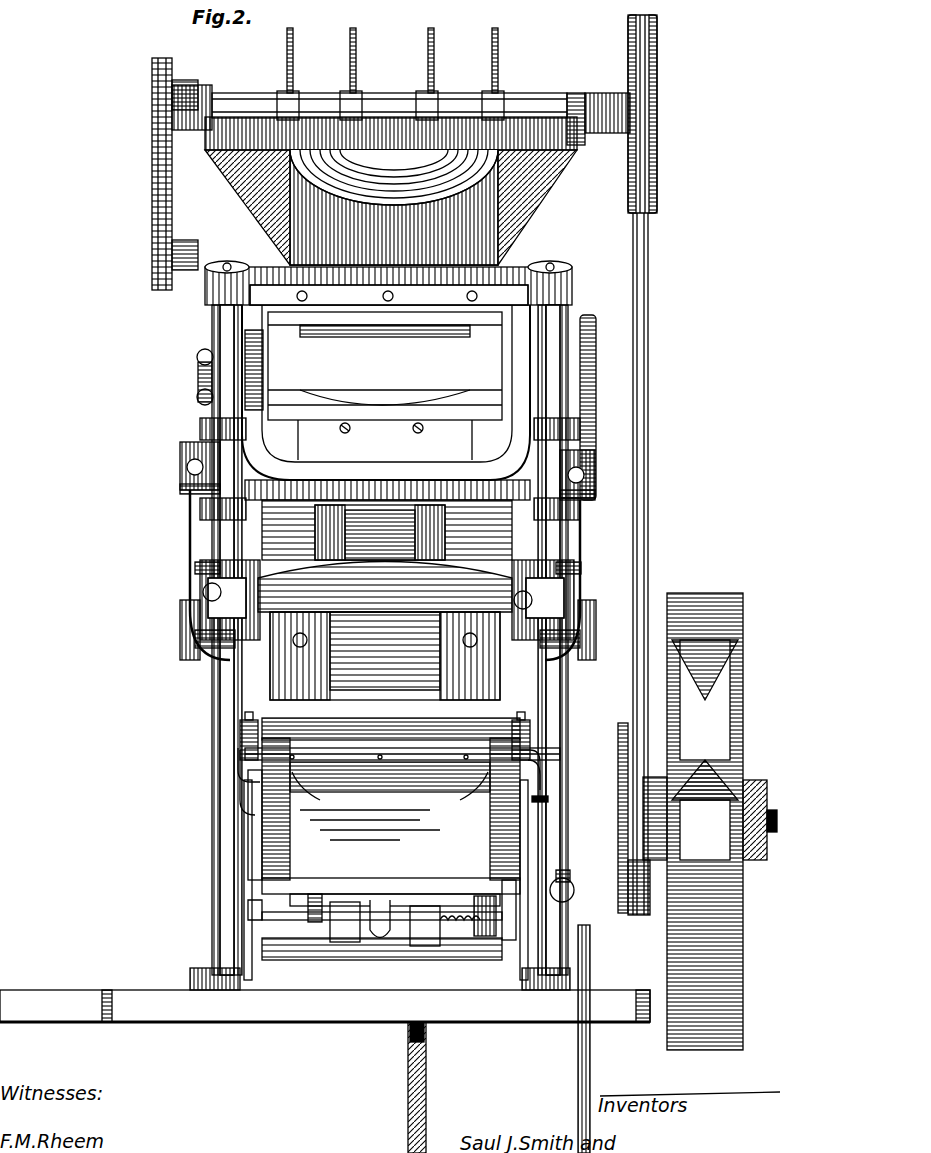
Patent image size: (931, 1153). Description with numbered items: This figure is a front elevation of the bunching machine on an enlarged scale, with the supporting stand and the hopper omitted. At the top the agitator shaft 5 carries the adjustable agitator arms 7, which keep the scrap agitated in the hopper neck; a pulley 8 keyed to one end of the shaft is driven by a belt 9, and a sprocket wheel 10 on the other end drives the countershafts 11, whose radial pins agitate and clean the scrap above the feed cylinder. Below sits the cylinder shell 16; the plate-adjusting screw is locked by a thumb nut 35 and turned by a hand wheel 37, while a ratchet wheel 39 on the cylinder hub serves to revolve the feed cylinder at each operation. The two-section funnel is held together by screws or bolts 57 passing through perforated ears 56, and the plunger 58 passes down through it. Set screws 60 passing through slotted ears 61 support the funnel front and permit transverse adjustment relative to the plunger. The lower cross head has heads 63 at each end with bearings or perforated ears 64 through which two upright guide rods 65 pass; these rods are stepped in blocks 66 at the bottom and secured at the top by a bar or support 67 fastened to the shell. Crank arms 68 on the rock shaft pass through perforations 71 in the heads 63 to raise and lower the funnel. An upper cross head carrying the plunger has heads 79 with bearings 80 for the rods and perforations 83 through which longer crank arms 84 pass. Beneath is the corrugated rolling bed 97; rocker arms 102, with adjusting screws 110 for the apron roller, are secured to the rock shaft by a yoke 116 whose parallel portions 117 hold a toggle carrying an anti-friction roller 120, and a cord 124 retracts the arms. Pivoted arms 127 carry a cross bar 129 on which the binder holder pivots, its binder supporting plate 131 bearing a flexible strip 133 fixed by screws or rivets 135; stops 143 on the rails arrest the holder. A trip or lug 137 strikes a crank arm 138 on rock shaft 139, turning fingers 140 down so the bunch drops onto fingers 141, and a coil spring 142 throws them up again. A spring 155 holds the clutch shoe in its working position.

The agitator shaft 5 is at (401, 105).
The agitator arms 7 is at (398, 74).
The pulley 8 is at (654, 114).
The belt 9 is at (654, 564).
The sprocket wheel 10 is at (157, 174).
The countershafts 11 is at (158, 267).
The cylinder shell 16 is at (400, 381).
The thumb nut 35 is at (184, 375).
The hand wheel 37 is at (603, 407).
The ratchet wheel 39 is at (211, 370).
The perforated ears 56 is at (381, 668).
The screws or bolts 57 is at (333, 658).
The plunger 58 is at (387, 530).
The set screws 60 is at (385, 587).
The slotted ears 61 is at (387, 586).
The heads 63 is at (373, 628).
The bearings or perforated ears 64 is at (381, 604).
The guide rods 65 is at (385, 759).
The blocks 66 is at (396, 974).
The bar or support 67 is at (388, 268).
The crank arms 68 is at (434, 587).
The perforations 71 is at (437, 575).
The heads 79 is at (421, 463).
The bearings 80 is at (415, 461).
The perforations 83 is at (411, 493).
The crank arms 84 is at (420, 471).
The rolling bed 97 is at (343, 816).
The rocker arms 102 is at (201, 825).
The screws 110 is at (386, 725).
The yoke 116 is at (382, 922).
The parallel portions 117 is at (382, 947).
The anti-friction roller 120 is at (538, 756).
The cord 124 is at (447, 1087).
The arms 127 is at (375, 880).
The cross bar 129 is at (391, 733).
The binder supporting plate 131 is at (571, 886).
The flexible strip 133 is at (402, 742).
The screws or rivets 135 is at (390, 791).
The trip or lug 137 is at (215, 784).
The crank arm 138 is at (209, 909).
The rock shaft 139 is at (254, 983).
The fingers 140 is at (316, 880).
The fingers 141 is at (395, 892).
The coil spring 142 is at (464, 932).
The stops 143 is at (360, 782).
The spring 155 is at (506, 964).